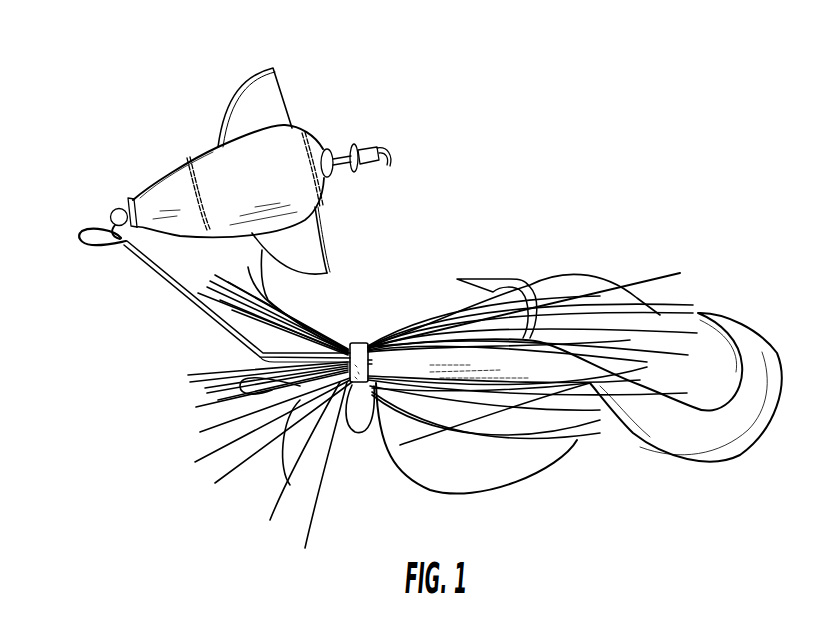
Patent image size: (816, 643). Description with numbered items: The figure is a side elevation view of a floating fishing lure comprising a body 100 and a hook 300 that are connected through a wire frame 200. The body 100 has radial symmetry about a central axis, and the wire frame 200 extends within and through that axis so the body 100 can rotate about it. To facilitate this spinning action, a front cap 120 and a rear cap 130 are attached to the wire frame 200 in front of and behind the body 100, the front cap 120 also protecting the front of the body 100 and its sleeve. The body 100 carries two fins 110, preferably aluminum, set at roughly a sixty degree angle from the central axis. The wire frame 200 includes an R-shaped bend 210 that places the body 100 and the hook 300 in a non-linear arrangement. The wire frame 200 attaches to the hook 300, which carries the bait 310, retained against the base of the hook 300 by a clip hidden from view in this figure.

The body 100 is at (288, 148).
The fin 110 is at (230, 119).
The front cap 120 is at (117, 208).
The rear cap 130 is at (365, 143).
The wire frame 200 is at (189, 317).
The bend 210 is at (100, 258).
The hook 300 is at (482, 271).
The bait 310 is at (609, 311).